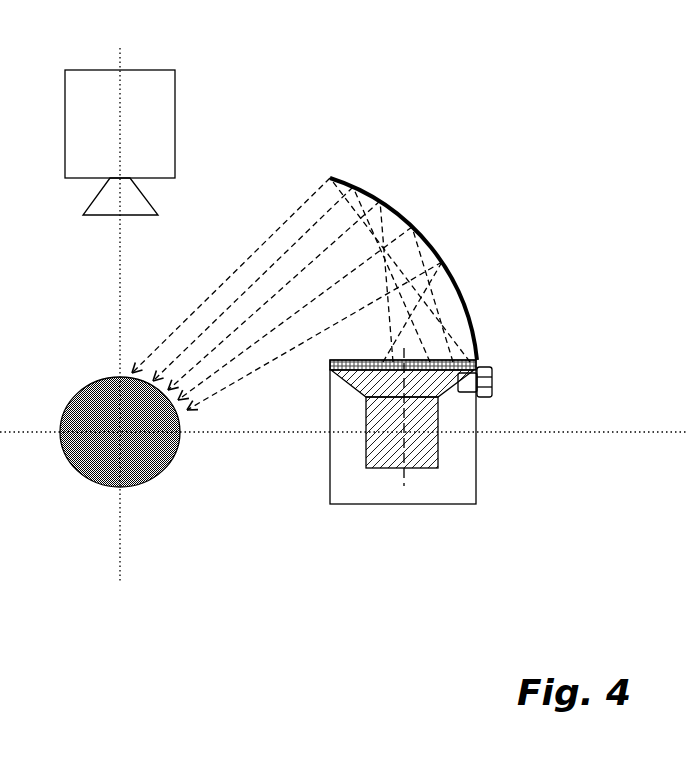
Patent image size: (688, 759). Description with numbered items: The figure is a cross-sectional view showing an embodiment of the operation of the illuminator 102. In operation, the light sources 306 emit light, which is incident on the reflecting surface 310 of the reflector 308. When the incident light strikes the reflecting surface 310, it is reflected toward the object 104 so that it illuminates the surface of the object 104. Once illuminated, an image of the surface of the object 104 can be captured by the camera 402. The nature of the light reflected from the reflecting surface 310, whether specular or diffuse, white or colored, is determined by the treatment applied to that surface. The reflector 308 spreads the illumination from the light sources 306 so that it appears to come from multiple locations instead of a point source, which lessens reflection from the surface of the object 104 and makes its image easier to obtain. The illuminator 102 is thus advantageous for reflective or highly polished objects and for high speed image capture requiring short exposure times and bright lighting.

The camera 402 is at (85, 93).
The object 104 is at (105, 466).
The reflector 308 is at (375, 189).
The reflecting surface 310 is at (438, 250).
The illuminator 102 is at (532, 320).
The light sources 306 is at (426, 452).